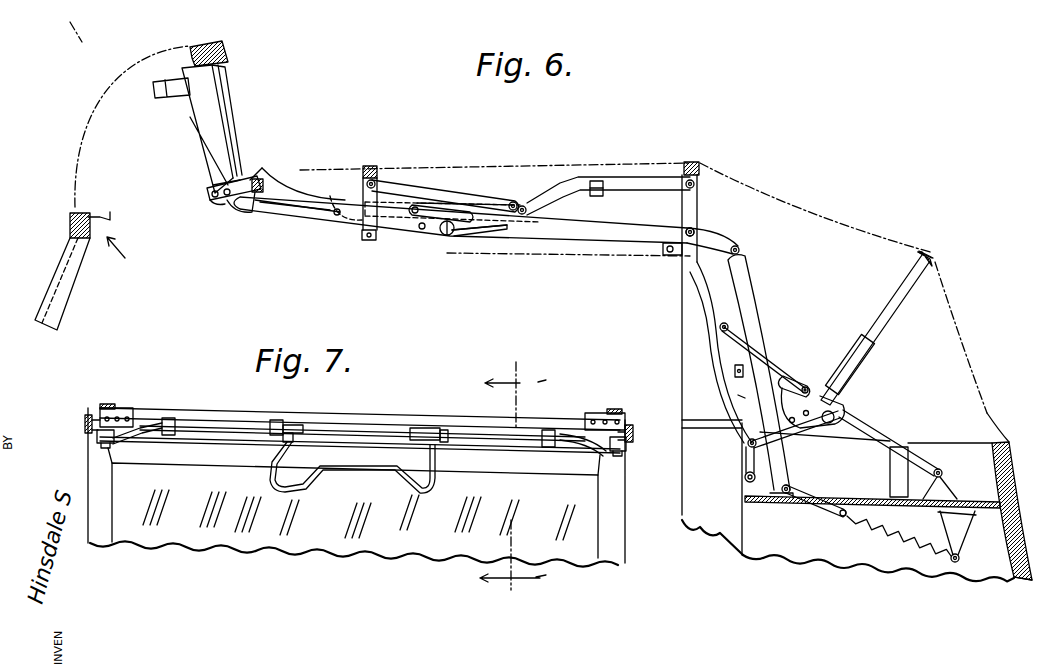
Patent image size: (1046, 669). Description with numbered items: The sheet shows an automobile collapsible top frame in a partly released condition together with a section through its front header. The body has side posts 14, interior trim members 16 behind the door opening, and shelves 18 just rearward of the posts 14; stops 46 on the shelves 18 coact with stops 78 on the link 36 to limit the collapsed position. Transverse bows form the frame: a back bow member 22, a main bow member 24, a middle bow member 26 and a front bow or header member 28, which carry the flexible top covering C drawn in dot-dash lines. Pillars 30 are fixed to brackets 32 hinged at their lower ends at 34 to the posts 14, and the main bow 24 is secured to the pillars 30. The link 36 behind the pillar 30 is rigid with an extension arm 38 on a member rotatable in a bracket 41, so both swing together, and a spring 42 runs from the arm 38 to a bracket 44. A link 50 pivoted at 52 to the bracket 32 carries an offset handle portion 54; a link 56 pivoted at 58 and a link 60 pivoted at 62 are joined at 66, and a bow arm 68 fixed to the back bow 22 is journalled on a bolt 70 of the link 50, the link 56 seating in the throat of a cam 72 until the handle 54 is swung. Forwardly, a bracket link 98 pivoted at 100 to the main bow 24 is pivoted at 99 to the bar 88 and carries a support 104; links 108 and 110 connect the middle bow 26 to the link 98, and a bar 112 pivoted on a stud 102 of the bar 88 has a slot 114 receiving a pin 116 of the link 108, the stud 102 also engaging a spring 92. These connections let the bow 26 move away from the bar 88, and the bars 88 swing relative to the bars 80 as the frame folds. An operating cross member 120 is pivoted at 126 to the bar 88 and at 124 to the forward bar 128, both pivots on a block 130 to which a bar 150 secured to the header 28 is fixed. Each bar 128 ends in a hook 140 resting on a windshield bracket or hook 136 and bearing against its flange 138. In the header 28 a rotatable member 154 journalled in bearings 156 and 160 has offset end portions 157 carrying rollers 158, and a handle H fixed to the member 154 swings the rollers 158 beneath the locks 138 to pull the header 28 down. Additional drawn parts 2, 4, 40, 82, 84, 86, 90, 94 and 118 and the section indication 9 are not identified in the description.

In FIG. 6, the window glass 2 is at (72, 222).
In FIG. 7, the window glass 2 is at (210, 462).
In FIG. 6, the door frame 4 is at (1012, 488).
In FIG. 7, the section line 9 is at (513, 479).
In FIG. 6, the side post 14 is at (700, 515).
In FIG. 6, the interior trim member 16 is at (1005, 576).
In FIG. 6, the shelf or support 18 is at (748, 508).
In FIG. 6, the back bow member 22 is at (935, 258).
In FIG. 6, the main bow member 24 is at (694, 162).
In FIG. 6, the middle bow member 26 is at (372, 166).
In FIG. 6, the front bow or header member 28 is at (212, 47).
In FIG. 7, the front bow or header member 28 is at (252, 410).
In FIG. 6, the pillar 30 is at (692, 283).
In FIG. 6, the bracket 32 is at (738, 395).
In FIG. 6, the hinge 34 is at (744, 476).
In FIG. 6, the link 36 is at (750, 265).
In FIG. 6, the extension arm 38 is at (832, 512).
In FIG. 6, the pivot 40 is at (792, 486).
In FIG. 6, the bracket 41 is at (776, 505).
In FIG. 6, the spring 42 is at (872, 527).
In FIG. 6, the bracket 44 is at (960, 538).
In FIG. 6, the stop 46 is at (896, 466).
In FIG. 6, the link 50 is at (765, 446).
In FIG. 6, the pivot 52 is at (746, 441).
In FIG. 6, the offset portion 54 is at (868, 340).
In FIG. 6, the link 56 is at (735, 335).
In FIG. 6, the pivot 58 is at (719, 327).
In FIG. 6, the link 60 is at (878, 426).
In FIG. 6, the pivot 62 is at (935, 447).
In FIG. 6, the pivot 66 is at (828, 392).
In FIG. 6, the bow arm 68 is at (916, 272).
In FIG. 6, the bolt 70 is at (790, 382).
In FIG. 6, the cam 72 is at (836, 412).
In FIG. 6, the stop 78 is at (740, 372).
In FIG. 6, the bar 80 is at (576, 238).
In FIG. 6, the pivot 82 is at (688, 228).
In FIG. 6, the link 84 is at (707, 232).
In FIG. 6, the pivot 86 is at (740, 247).
In FIG. 6, the bar 88 is at (290, 206).
In FIG. 6, the roller 90 is at (447, 235).
In FIG. 6, the spring 92 is at (470, 232).
In FIG. 6, the wedge 94 is at (505, 230).
In FIG. 6, the bracket link 98 is at (620, 180).
In FIG. 6, the pivot 99 is at (420, 229).
In FIG. 6, the pivot 100 is at (700, 172).
In FIG. 6, the stud 102 is at (300, 210).
In FIG. 6, the support 104 is at (592, 182).
In FIG. 6, the link 108 is at (420, 205).
In FIG. 6, the link 110 is at (395, 185).
In FIG. 6, the bar 112 is at (345, 200).
In FIG. 6, the slot 114 is at (462, 205).
In FIG. 6, the pin 116 is at (435, 205).
In FIG. 6, the bracket block 118 is at (243, 203).
In FIG. 6, the cross member 120 is at (262, 166).
In FIG. 6, the pivot 124 is at (213, 191).
In FIG. 6, the pivot 126 is at (218, 201).
In FIG. 6, the forward bar 128 is at (196, 146).
In FIG. 7, the forward bar 128 is at (634, 431).
In FIG. 6, the block member 130 is at (208, 170).
In FIG. 6, the bracket or hook 136 is at (128, 255).
In FIG. 7, the bracket or hook 136 is at (622, 452).
In FIG. 6, the flange 138 is at (110, 220).
In FIG. 6, the hook 140 is at (155, 85).
In FIG. 7, the hook 140 is at (626, 440).
In FIG. 6, the bar 150 is at (230, 118).
In FIG. 7, the bar 150 is at (600, 418).
In FIG. 7, the rotatable member 154 is at (340, 424).
In FIG. 7, the bearing 156 is at (444, 430).
In FIG. 7, the offset end portion 157 is at (525, 485).
In FIG. 7, the roller 158 is at (583, 456).
In FIG. 7, the bearing 160 is at (548, 430).
In FIG. 6, the top covering C is at (822, 225).
In FIG. 7, the handle H is at (352, 469).